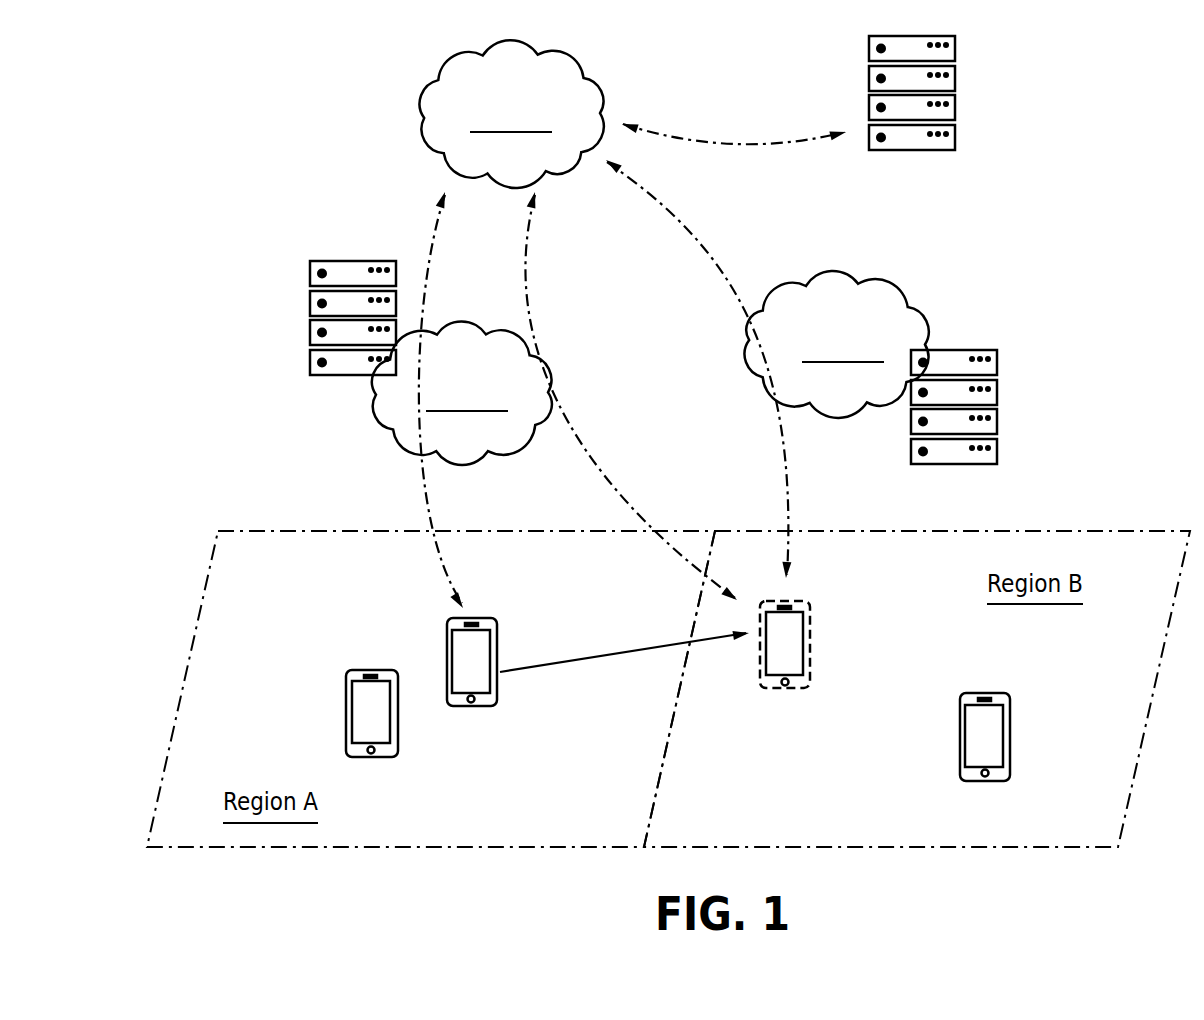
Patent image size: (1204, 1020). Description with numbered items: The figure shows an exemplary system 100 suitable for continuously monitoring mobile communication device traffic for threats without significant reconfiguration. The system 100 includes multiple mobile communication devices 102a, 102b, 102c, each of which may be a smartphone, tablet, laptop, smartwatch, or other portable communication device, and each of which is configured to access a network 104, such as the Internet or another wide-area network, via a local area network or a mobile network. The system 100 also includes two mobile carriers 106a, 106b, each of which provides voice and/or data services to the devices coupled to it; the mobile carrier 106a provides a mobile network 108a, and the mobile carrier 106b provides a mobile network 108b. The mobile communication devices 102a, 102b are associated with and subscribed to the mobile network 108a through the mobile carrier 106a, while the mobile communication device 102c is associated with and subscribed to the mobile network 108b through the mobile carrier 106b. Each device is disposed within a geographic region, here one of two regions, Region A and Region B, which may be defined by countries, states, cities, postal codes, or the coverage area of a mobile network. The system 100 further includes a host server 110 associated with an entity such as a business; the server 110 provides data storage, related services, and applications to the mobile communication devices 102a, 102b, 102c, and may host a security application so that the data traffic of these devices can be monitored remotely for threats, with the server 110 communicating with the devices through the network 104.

The system 100 is at (250, 148).
The mobile communication device 102a is at (475, 617).
The mobile communication device 102b is at (372, 670).
The mobile communication device 102c is at (960, 716).
The network 104 is at (607, 82).
The mobile carrier 106a is at (310, 332).
The mobile carrier 106b is at (997, 390).
The mobile network 108a is at (553, 362).
The mobile network 108b is at (917, 283).
The host server 110 is at (990, 85).